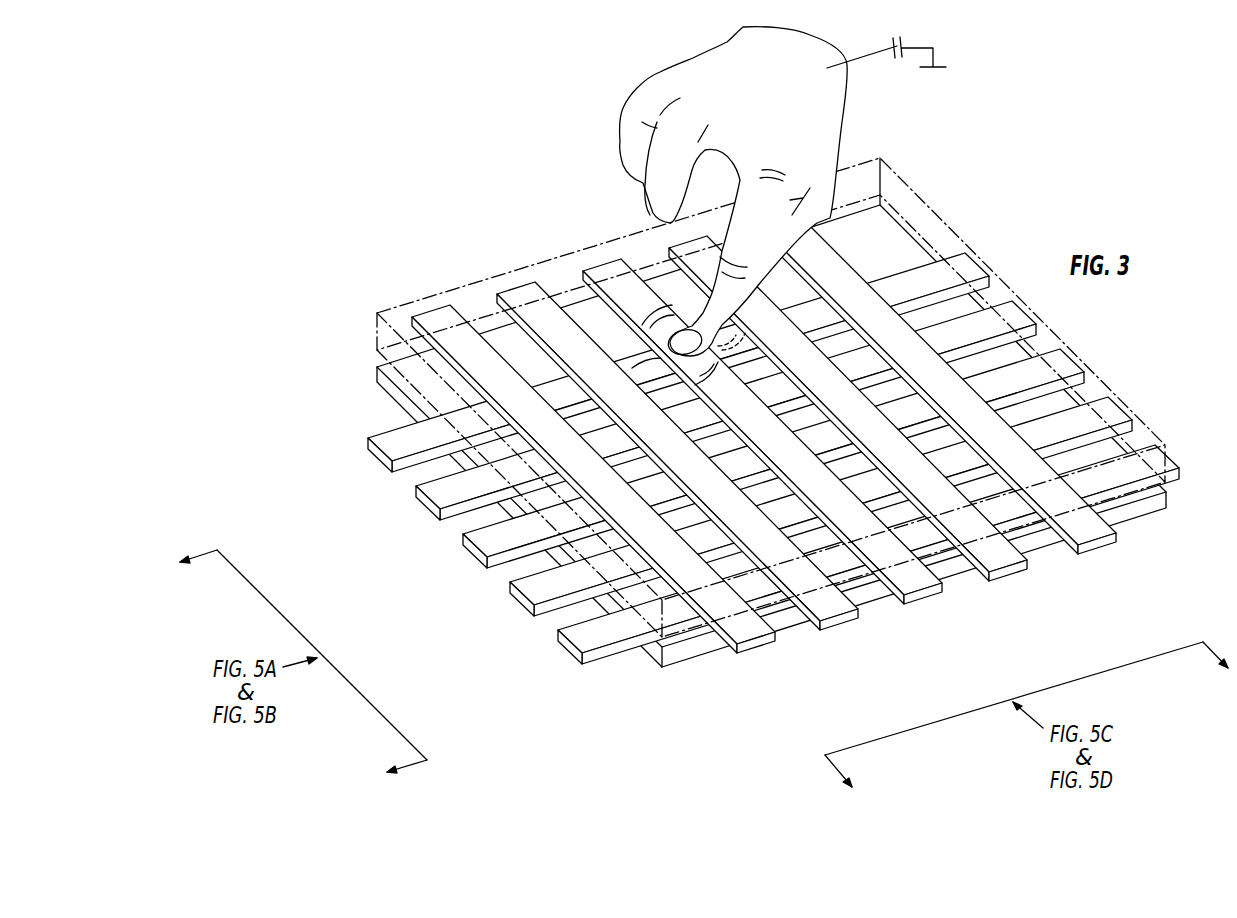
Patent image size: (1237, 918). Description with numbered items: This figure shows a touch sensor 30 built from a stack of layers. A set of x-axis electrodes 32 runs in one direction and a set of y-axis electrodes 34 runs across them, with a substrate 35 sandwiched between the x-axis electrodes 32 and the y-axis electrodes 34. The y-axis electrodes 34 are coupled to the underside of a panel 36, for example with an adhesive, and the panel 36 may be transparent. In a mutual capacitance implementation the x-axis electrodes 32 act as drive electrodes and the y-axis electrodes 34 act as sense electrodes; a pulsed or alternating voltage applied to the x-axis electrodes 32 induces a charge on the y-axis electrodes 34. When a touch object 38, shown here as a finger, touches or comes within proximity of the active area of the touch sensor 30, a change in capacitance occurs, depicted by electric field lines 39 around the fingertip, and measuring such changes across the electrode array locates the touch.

The touch sensor 30 is at (712, 400).
The x-axis electrodes 32 is at (570, 676).
The y-axis electrodes 34 is at (1182, 543).
The substrate 35 is at (376, 371).
The panel 36 is at (458, 146).
The touch object 38 is at (773, 109).
The electric field lines 39 is at (645, 352).